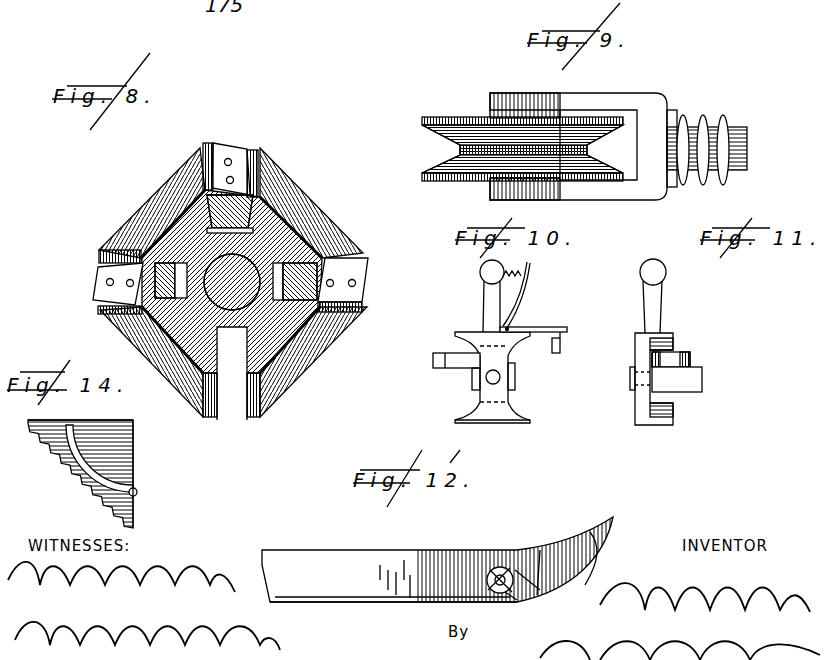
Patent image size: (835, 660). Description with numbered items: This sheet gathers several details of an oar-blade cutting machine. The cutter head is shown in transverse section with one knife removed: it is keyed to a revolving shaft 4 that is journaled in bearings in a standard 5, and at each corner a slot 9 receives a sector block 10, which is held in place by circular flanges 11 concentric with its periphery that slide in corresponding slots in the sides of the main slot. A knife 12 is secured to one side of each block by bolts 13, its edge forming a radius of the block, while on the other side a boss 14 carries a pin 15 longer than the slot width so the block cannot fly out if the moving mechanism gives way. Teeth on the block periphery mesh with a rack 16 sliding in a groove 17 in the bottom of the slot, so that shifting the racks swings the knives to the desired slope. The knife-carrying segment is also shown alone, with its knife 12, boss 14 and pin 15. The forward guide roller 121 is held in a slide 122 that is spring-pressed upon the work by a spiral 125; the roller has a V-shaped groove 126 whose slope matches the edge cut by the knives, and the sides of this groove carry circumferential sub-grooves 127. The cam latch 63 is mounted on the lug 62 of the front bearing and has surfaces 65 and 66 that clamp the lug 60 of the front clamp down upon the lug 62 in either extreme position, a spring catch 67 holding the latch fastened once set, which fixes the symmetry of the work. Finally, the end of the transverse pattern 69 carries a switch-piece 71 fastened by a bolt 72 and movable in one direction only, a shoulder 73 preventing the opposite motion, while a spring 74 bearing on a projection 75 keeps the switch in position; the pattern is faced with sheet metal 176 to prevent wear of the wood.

In FIG. 8, the standard 5 is at (232, 281).
In FIG. 8, the slot 9 is at (245, 143).
In FIG. 8, the sector block 10 is at (163, 313).
In FIG. 14, the sector block 10 is at (63, 473).
In FIG. 8, the circular flange 11 is at (312, 258).
In FIG. 14, the circular flange 11 is at (133, 503).
In FIG. 8, the knife 12 is at (343, 313).
In FIG. 14, the knife 12 is at (120, 418).
In FIG. 8, the bolt 13 is at (356, 283).
In FIG. 8, the rack 16 is at (183, 267).
In FIG. 8, the groove 17 is at (293, 233).
In FIG. 9, the roller 121 is at (482, 117).
In FIG. 9, the slide 122 is at (620, 103).
In FIG. 9, the spiral 125 is at (703, 113).
In FIG. 9, the V-shaped groove 126 is at (427, 170).
In FIG. 9, the circumferential sub-groove 127 is at (603, 147).
In FIG. 10, the revolving shaft 4 is at (500, 377).
In FIG. 10, the lug 60 is at (468, 358).
In FIG. 11, the lug 60 is at (692, 358).
In FIG. 10, the lug 62 is at (463, 387).
In FIG. 11, the lug 62 is at (702, 378).
In FIG. 10, the cam latch 63 is at (488, 288).
In FIG. 11, the cam latch 63 is at (650, 302).
In FIG. 10, the clamping surface 65 is at (443, 340).
In FIG. 11, the clamping surface 65 is at (673, 343).
In FIG. 10, the clamping surface 66 is at (527, 412).
In FIG. 11, the clamping surface 66 is at (665, 413).
In FIG. 10, the spring catch 67 is at (567, 328).
In FIG. 14, the boss 14 is at (145, 470).
In FIG. 14, the pin 15 is at (137, 492).
In FIG. 12, the pattern 69 is at (439, 560).
In FIG. 12, the switch-piece 71 is at (562, 557).
In FIG. 12, the bolt 72 is at (517, 597).
In FIG. 12, the shoulder 73 is at (500, 552).
In FIG. 12, the spring 74 is at (540, 590).
In FIG. 12, the projection 75 is at (537, 550).
In FIG. 12, the sheet metal facing 176 is at (337, 602).